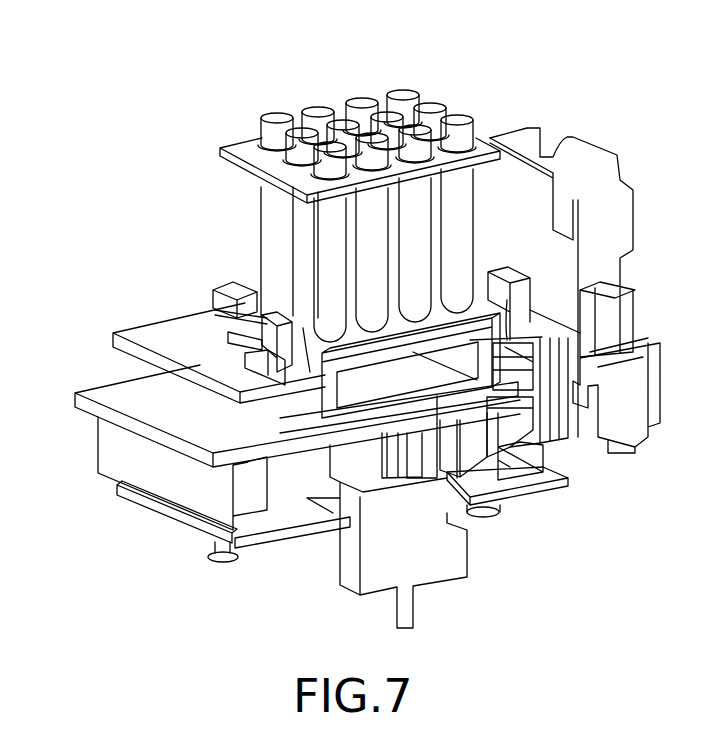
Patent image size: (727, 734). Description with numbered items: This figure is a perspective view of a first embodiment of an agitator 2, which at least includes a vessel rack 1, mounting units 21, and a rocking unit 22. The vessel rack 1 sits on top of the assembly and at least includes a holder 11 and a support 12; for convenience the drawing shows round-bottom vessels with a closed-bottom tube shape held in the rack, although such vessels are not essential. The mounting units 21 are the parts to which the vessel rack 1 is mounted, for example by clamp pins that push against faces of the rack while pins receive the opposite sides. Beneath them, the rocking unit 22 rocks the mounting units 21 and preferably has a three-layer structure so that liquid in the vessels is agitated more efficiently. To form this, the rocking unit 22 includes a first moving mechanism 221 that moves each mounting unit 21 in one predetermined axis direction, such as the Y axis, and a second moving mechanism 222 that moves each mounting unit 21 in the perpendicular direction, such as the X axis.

The vessel rack 1 is at (468, 67).
The holder 11 is at (218, 152).
The support 12 is at (530, 283).
The agitator 2 is at (601, 68).
The mounting unit 21 is at (201, 309).
The rocking unit 22 is at (68, 598).
The first moving mechanism 221 is at (150, 385).
The second moving mechanism 222 is at (147, 325).